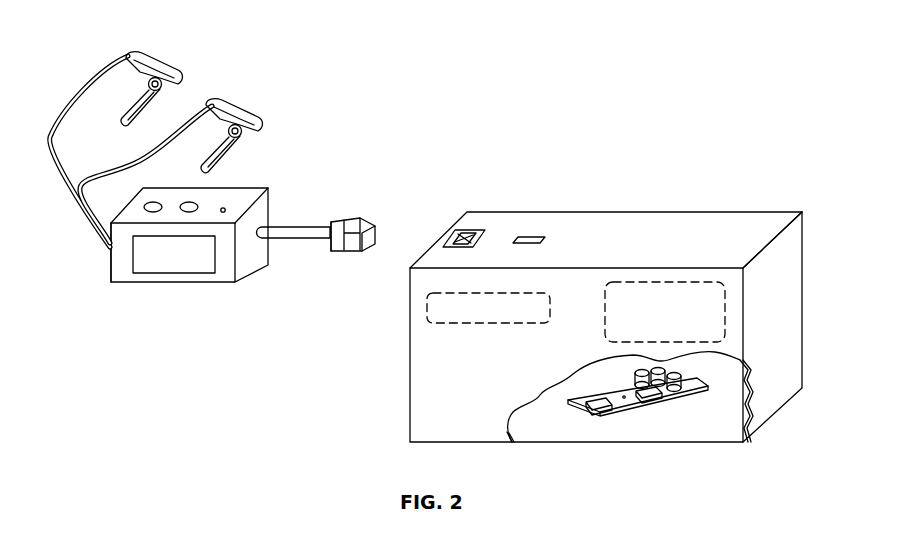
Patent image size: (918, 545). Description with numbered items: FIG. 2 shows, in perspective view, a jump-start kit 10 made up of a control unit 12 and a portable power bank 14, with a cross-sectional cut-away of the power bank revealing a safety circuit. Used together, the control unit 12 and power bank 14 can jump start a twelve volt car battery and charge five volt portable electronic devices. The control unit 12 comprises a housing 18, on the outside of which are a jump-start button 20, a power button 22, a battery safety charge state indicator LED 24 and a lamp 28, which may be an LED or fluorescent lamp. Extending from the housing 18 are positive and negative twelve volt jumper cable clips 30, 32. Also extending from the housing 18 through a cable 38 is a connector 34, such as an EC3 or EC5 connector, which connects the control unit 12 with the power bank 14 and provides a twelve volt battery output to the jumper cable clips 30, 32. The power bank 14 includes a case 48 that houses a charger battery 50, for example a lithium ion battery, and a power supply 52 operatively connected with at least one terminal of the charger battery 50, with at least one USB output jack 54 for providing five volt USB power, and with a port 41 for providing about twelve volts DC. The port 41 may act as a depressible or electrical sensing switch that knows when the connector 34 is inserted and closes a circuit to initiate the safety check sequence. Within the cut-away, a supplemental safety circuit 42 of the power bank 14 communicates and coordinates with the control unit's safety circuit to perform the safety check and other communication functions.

The jump-start kit 10 is at (738, 125).
The control unit 12 is at (253, 200).
The power bank 14 is at (618, 247).
The housing 18 is at (118, 264).
The jump-start button 20 is at (150, 203).
The power button 22 is at (189, 201).
The battery safety charge state indicator LED 24 is at (225, 207).
The lamp 28 is at (217, 282).
The positive jumper cable clip 30 is at (177, 66).
The negative jumper cable clip 32 is at (262, 118).
The connector 34 is at (360, 254).
The cable 38 is at (291, 240).
The port 41 is at (468, 238).
The supplemental safety circuit 42 is at (673, 404).
The case 48 is at (762, 220).
The charger battery 50 is at (500, 318).
The power supply 52 is at (675, 322).
The USB output jack 54 is at (528, 239).